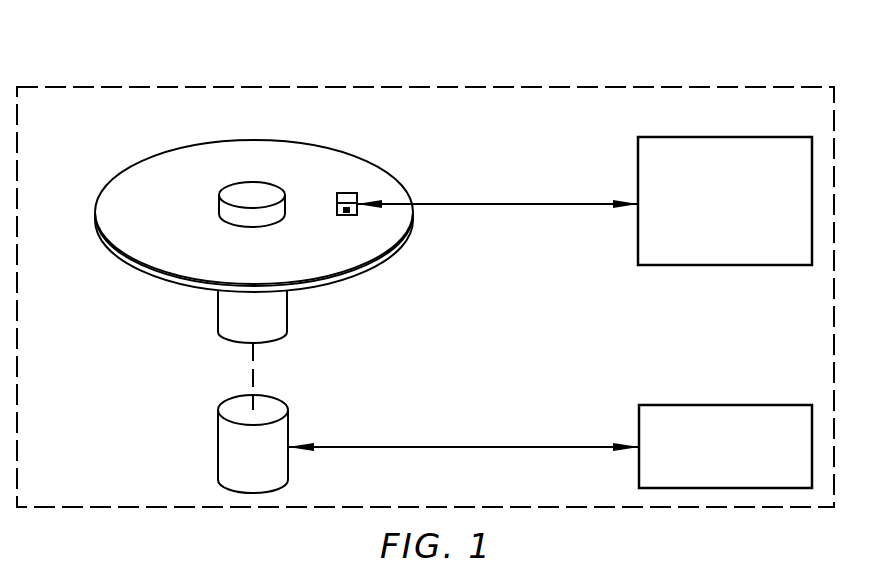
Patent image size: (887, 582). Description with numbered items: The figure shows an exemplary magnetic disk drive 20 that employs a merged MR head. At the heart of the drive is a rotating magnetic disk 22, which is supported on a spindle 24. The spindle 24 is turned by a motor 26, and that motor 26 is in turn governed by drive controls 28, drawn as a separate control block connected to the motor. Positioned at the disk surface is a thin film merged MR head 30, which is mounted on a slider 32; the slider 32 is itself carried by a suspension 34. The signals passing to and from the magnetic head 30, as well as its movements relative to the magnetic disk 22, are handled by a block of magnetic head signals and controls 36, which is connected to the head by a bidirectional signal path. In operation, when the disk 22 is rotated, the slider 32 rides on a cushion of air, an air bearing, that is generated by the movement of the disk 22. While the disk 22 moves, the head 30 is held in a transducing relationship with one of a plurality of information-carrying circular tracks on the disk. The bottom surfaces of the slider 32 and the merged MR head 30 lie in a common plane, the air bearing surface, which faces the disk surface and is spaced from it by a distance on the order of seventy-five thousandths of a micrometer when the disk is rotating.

The magnetic disk drive 20 is at (474, 63).
The rotating magnetic disk 22 is at (130, 178).
The spindle 24 is at (218, 313).
The motor 26 is at (218, 449).
The drive controls 28 is at (725, 405).
The thin film merged MR head 30 is at (348, 215).
The slider 32 is at (348, 193).
The suspension 34 is at (493, 205).
The magnetic head signals and controls 36 is at (723, 137).